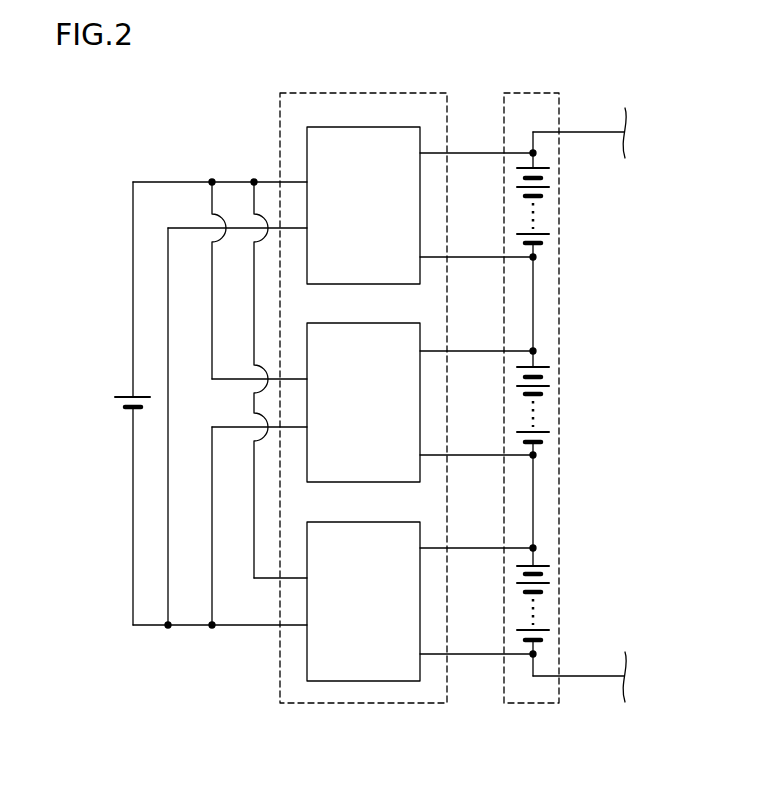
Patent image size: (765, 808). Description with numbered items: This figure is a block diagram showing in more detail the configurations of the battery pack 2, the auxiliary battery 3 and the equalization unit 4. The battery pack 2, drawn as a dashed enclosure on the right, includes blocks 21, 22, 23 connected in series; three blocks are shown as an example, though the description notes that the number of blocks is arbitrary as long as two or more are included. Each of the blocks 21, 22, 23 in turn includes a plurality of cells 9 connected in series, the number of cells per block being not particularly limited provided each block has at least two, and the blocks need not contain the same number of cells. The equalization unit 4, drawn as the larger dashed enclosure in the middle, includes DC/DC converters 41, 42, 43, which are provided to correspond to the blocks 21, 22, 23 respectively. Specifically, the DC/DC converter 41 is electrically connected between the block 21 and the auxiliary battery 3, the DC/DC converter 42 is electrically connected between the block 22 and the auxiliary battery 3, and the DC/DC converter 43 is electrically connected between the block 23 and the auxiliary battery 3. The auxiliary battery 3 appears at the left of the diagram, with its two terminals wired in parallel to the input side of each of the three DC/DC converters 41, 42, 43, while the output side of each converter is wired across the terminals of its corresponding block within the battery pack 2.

The battery pack 2 is at (542, 93).
The auxiliary battery 3 is at (125, 395).
The equalization unit 4 is at (397, 93).
The cell 9 is at (538, 167).
The block 21 is at (563, 167).
The block 22 is at (563, 369).
The block 23 is at (563, 564).
The DC/DC converter 41 is at (373, 125).
The DC/DC converter 42 is at (373, 323).
The DC/DC converter 43 is at (373, 522).